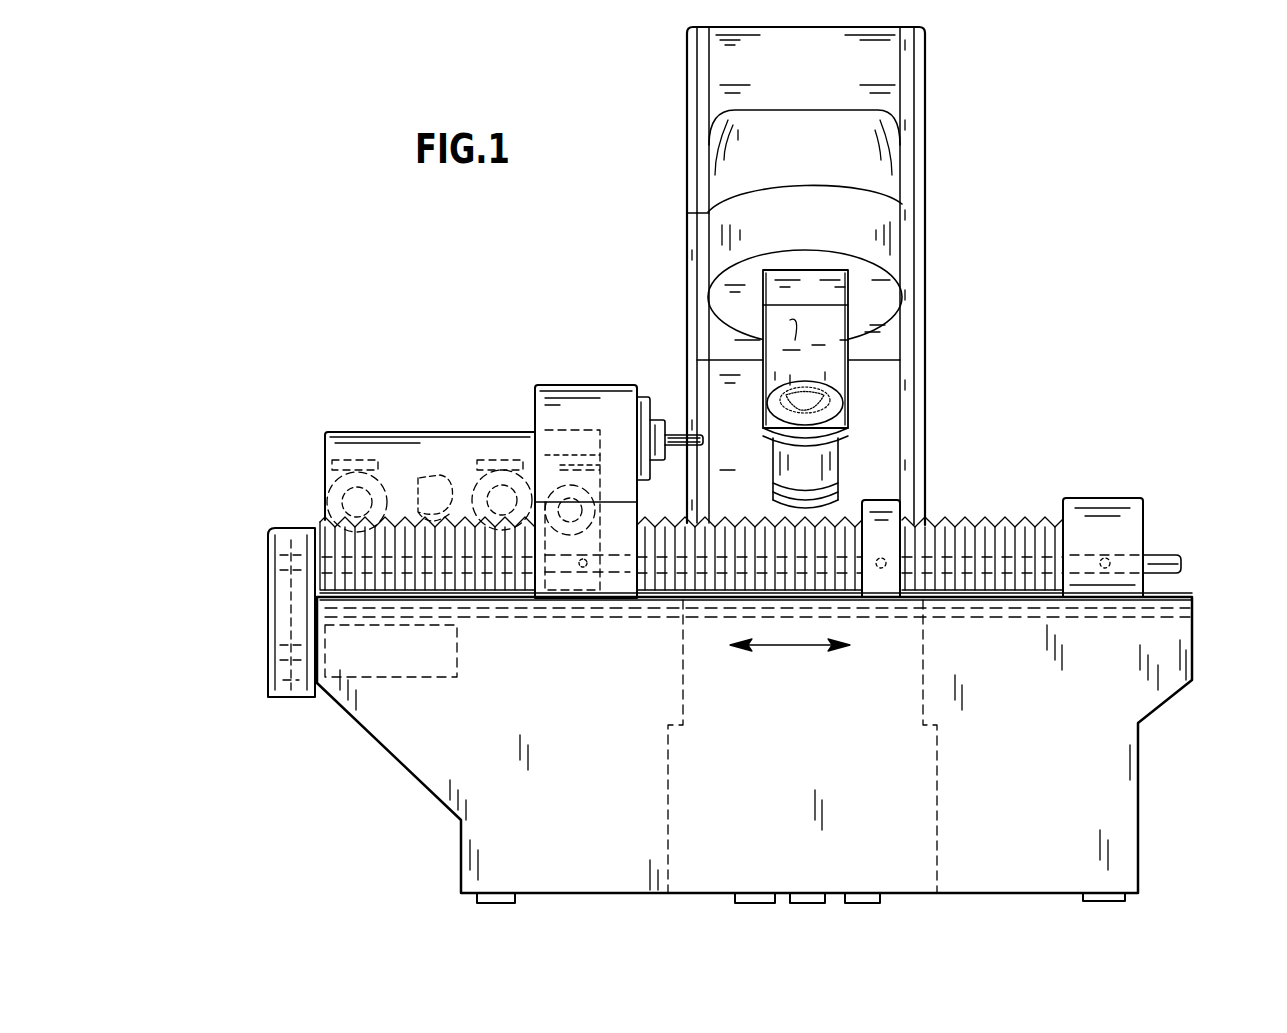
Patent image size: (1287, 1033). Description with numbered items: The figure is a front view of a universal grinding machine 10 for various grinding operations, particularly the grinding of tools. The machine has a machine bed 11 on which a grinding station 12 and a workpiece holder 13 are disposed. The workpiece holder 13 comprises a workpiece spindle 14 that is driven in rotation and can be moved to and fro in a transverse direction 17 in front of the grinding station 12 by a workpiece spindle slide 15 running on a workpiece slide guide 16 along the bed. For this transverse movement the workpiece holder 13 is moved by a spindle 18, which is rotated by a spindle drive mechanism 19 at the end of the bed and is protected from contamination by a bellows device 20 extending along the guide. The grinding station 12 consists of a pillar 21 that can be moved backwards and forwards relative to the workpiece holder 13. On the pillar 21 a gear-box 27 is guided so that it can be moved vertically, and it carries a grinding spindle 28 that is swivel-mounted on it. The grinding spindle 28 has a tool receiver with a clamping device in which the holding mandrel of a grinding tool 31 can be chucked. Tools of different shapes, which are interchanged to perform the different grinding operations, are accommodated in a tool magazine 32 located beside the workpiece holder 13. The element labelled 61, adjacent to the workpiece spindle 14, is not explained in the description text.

The universal grinding machine 10 is at (972, 132).
The machine bed 11 is at (1030, 822).
The grinding station 12 is at (735, 257).
The workpiece holder 13 is at (582, 405).
The workpiece spindle 14 is at (658, 412).
The workpiece spindle slide 15 is at (617, 538).
The workpiece slide guide 16 is at (513, 594).
The transverse direction 17 is at (793, 645).
The spindle 18 is at (1183, 562).
The spindle drive mechanism 19 is at (278, 617).
The bellows device 20 is at (968, 532).
The pillar 21 is at (812, 87).
The gear-box 27 is at (725, 303).
The grinding spindle 28 is at (787, 467).
The grinding tool 31 is at (773, 412).
The tool magazine 32 is at (425, 452).
The coupling 61 is at (680, 450).